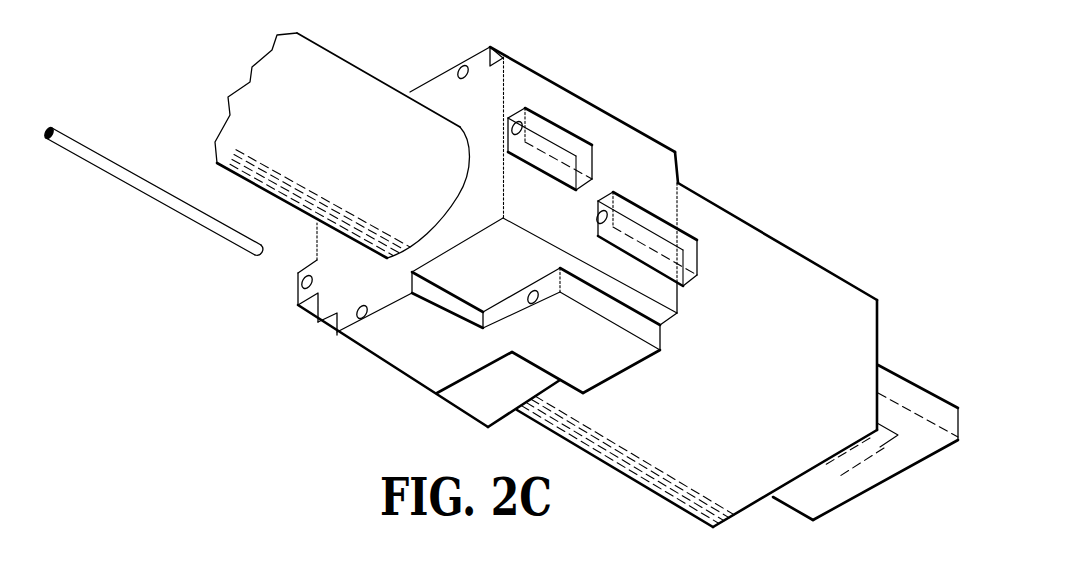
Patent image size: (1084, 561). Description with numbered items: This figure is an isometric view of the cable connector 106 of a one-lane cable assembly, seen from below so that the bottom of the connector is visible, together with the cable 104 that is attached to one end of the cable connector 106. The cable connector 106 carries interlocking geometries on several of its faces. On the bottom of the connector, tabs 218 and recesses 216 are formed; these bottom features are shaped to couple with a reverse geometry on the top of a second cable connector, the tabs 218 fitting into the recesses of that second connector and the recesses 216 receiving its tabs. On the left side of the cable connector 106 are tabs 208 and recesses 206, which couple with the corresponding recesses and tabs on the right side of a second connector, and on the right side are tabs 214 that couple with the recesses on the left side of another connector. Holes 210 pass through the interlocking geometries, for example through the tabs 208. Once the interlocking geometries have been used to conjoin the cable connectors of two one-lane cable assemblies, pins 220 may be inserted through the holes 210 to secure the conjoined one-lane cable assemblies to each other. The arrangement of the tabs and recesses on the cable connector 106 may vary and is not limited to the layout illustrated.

The cable 104 is at (360, 68).
The cable connector 106 is at (778, 237).
The recesses 206 is at (658, 184).
The tabs 208 is at (569, 143).
The holes 210 is at (511, 130).
The tabs 214 is at (296, 307).
The recesses 216 is at (518, 281).
The tabs 218 is at (445, 356).
The pins 220 is at (161, 182).